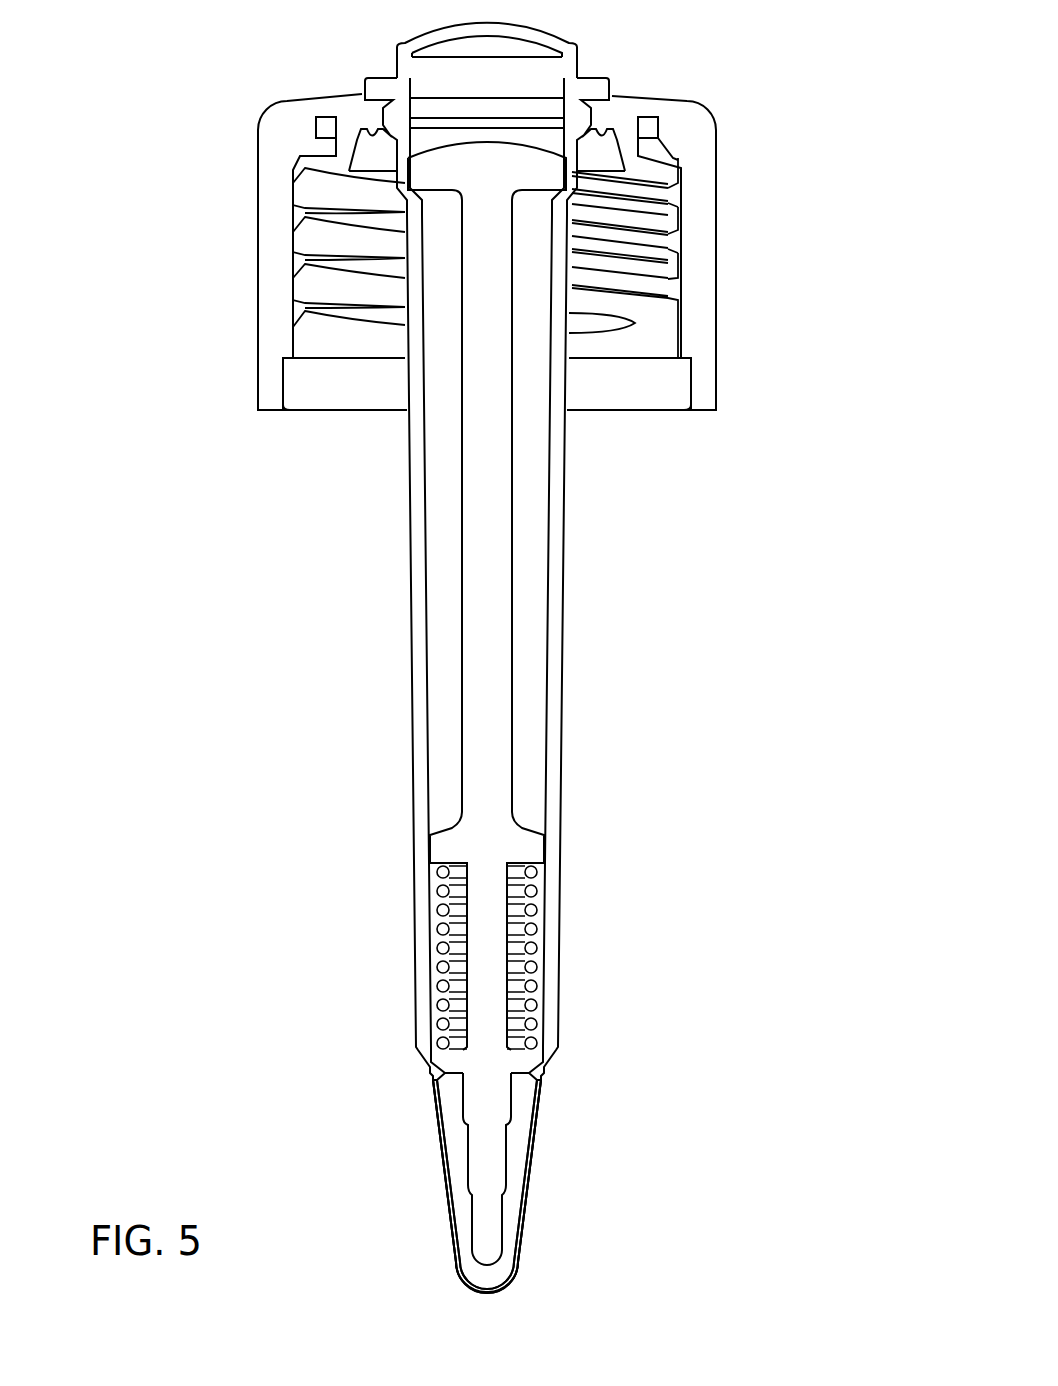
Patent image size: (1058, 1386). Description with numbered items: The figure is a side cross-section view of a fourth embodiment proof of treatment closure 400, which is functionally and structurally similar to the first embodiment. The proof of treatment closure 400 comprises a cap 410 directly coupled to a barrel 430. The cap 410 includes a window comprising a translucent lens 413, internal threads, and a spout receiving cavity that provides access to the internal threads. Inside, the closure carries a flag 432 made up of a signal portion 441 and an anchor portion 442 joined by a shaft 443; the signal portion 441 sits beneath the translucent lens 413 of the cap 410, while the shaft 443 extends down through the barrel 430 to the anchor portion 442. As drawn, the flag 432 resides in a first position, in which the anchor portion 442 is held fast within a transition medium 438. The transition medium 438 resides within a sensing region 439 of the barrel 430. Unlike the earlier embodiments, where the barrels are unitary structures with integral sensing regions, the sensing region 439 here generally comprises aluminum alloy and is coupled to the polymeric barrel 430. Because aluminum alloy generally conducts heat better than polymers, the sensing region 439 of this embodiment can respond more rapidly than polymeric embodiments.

The proof of treatment closure 400 is at (808, 108).
The cap 410 is at (716, 250).
The translucent lens 413 is at (462, 26).
The barrel 430 is at (562, 665).
The flag 432 is at (528, 565).
The transition medium 438 is at (512, 1175).
The sensing region 439 is at (415, 1075).
The signal portion 441 is at (533, 177).
The anchor portion 442 is at (482, 1152).
The shaft 443 is at (512, 493).